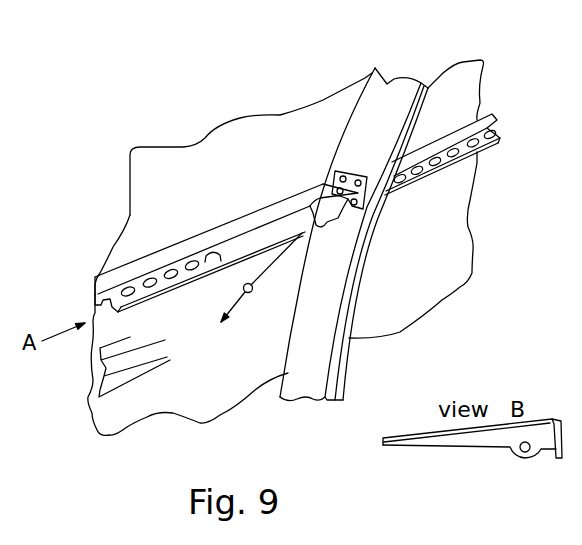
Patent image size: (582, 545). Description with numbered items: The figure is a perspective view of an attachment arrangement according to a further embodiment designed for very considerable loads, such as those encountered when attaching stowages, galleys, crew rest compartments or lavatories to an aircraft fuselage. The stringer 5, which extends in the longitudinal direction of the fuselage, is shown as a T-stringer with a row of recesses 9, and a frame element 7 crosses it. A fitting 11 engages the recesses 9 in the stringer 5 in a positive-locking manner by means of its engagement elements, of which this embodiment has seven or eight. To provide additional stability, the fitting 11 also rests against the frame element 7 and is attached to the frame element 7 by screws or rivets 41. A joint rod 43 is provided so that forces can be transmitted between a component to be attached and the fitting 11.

The stringer 5 is at (150, 262).
The frame element 7 is at (388, 83).
The recesses 9 is at (148, 306).
The fitting 11 is at (216, 262).
The screws or rivets 41 is at (336, 172).
The joint rod 43 is at (248, 294).